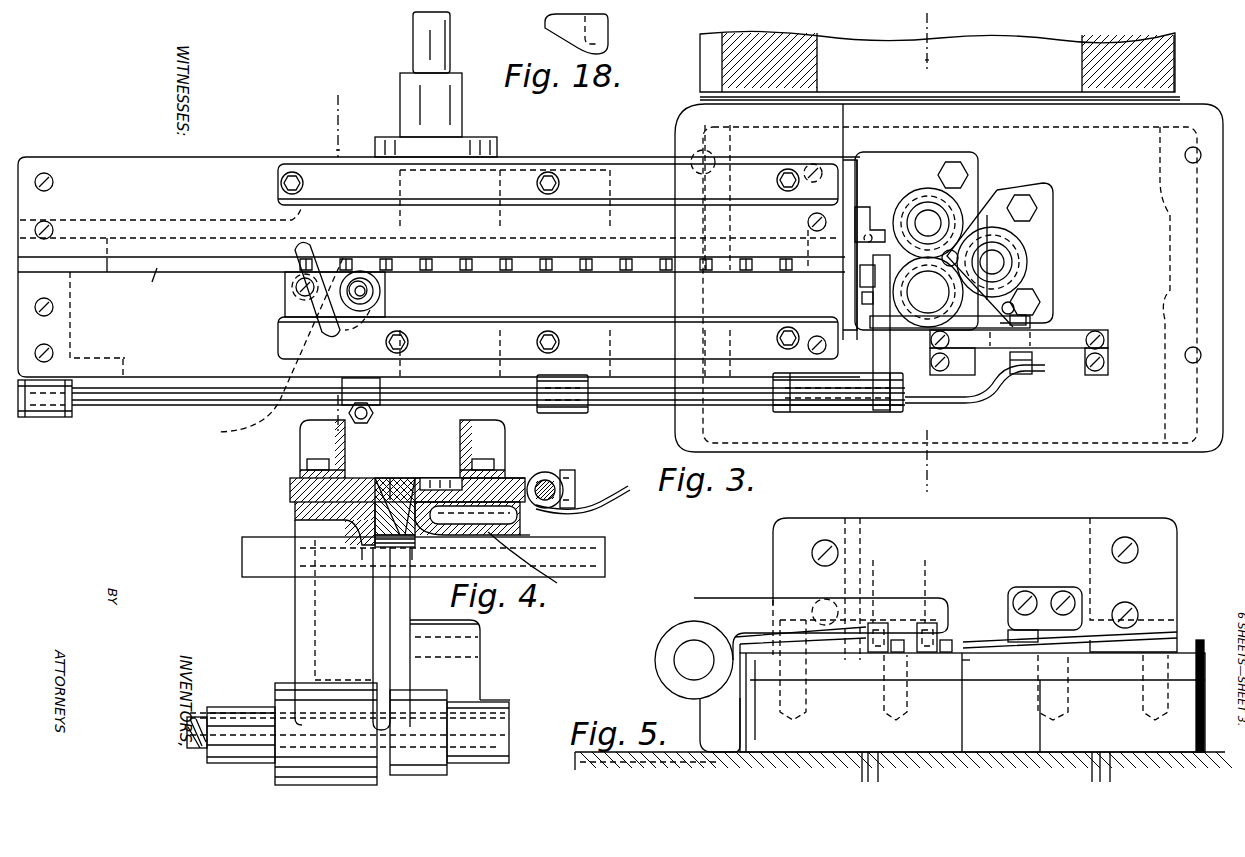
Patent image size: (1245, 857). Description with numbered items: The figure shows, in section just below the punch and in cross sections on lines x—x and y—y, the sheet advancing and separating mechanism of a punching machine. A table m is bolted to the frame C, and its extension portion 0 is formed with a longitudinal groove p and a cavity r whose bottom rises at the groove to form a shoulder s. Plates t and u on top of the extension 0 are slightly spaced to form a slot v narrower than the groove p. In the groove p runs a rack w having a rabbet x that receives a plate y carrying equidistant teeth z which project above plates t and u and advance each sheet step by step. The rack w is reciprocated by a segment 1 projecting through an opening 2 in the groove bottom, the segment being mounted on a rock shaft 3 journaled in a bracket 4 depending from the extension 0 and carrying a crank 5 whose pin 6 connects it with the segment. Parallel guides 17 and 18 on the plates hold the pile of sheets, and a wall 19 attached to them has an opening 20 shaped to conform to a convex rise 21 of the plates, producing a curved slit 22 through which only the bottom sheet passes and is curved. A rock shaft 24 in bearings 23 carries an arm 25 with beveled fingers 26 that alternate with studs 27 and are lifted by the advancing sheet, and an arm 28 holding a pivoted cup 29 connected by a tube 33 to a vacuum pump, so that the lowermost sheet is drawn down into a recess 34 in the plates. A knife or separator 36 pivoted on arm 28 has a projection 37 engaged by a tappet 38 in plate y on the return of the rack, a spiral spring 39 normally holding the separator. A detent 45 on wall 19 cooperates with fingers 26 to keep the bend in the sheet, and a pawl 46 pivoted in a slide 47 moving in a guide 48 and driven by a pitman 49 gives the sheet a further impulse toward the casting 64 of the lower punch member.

In FIG. 4, the segment 1 is at (372, 652).
In FIG. 4, the opening 2 is at (402, 585).
In FIG. 3, the rock shaft 3 is at (440, 53).
In FIG. 4, the rock shaft 3 is at (511, 735).
In FIG. 4, the bracket 4 is at (294, 652).
In FIG. 4, the crank 5 is at (473, 680).
In FIG. 4, the pin 6 is at (479, 650).
In FIG. 3, the parallel guide 17 is at (558, 197).
In FIG. 4, the parallel guide 17 is at (347, 437).
In FIG. 3, the parallel guide 18 is at (558, 348).
In FIG. 4, the parallel guide 18 is at (458, 437).
In FIG. 3, the wall 19 is at (848, 208).
In FIG. 5, the wall 19 is at (975, 523).
In FIG. 5, the opening 20 is at (962, 640).
In FIG. 5, the convex rise 21 is at (1000, 648).
In FIG. 5, the curved slit 22 is at (1016, 646).
In FIG. 3, the bearings 23 is at (570, 413).
In FIG. 5, the bearings 23 is at (668, 680).
In FIG. 3, the rock shaft 24 is at (653, 405).
In FIG. 4, the rock shaft 24 is at (548, 486).
In FIG. 5, the rock shaft 24 is at (690, 662).
In FIG. 3, the arm 25 is at (890, 348).
In FIG. 5, the arm 25 is at (785, 608).
In FIG. 3, the fingers 26 is at (862, 300).
In FIG. 18, the fingers 26 is at (556, 40).
In FIG. 5, the fingers 26 is at (928, 626).
In FIG. 3, the studs 27 is at (832, 287).
In FIG. 5, the studs 27 is at (947, 648).
In FIG. 3, the arm 28 is at (398, 320).
In FIG. 4, the arm 28 is at (480, 510).
In FIG. 3, the cup 29 is at (383, 290).
In FIG. 4, the cup 29 is at (458, 478).
In FIG. 4, the tube 33 is at (583, 496).
In FIG. 3, the recess 34 is at (310, 220).
In FIG. 3, the knife or separator 36 is at (314, 303).
In FIG. 3, the projection 37 is at (297, 248).
In FIG. 3, the tappet 38 is at (336, 262).
In FIG. 3, the spiral spring 39 is at (290, 291).
In FIG. 3, the detent 45 is at (870, 216).
In FIG. 5, the detent 45 is at (1043, 593).
In FIG. 3, the pawl 46 is at (898, 330).
In FIG. 3, the slide 47 is at (1035, 352).
In FIG. 3, the guide 48 is at (1070, 334).
In FIG. 3, the pitman 49 is at (932, 400).
In FIG. 3, the casting 64 is at (1045, 283).
In FIG. 3, the plate t is at (439, 267).
In FIG. 4, the plate t is at (344, 490).
In FIG. 3, the plate u is at (161, 353).
In FIG. 4, the plate u is at (508, 482).
In FIG. 3, the slot v is at (150, 286).
In FIG. 4, the slot v is at (405, 490).
In FIG. 5, the slot v is at (970, 665).
In FIG. 4, the rack w is at (370, 552).
In FIG. 3, the rabbet x is at (334, 255).
In FIG. 4, the rabbet x is at (379, 578).
In FIG. 3, the plate y is at (935, 251).
In FIG. 4, the plate y is at (410, 482).
In FIG. 3, the teeth z is at (630, 257).
In FIG. 3, the table m is at (949, 278).
In FIG. 4, the table m is at (605, 562).
In FIG. 5, the table m is at (835, 752).
In FIG. 3, the frame C is at (1172, 63).
In FIG. 4, the longitudinal groove p is at (358, 523).
In FIG. 4, the shoulder s is at (414, 560).
In FIG. 4, the cavity r is at (531, 565).
In FIG. 4, the opening 0 is at (521, 548).